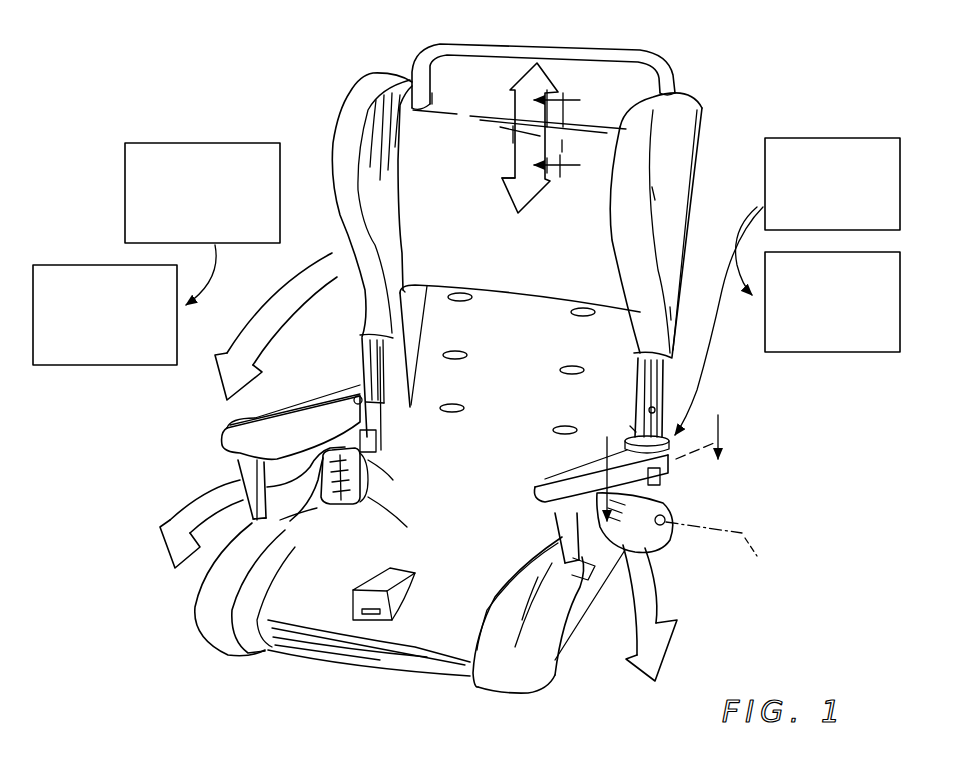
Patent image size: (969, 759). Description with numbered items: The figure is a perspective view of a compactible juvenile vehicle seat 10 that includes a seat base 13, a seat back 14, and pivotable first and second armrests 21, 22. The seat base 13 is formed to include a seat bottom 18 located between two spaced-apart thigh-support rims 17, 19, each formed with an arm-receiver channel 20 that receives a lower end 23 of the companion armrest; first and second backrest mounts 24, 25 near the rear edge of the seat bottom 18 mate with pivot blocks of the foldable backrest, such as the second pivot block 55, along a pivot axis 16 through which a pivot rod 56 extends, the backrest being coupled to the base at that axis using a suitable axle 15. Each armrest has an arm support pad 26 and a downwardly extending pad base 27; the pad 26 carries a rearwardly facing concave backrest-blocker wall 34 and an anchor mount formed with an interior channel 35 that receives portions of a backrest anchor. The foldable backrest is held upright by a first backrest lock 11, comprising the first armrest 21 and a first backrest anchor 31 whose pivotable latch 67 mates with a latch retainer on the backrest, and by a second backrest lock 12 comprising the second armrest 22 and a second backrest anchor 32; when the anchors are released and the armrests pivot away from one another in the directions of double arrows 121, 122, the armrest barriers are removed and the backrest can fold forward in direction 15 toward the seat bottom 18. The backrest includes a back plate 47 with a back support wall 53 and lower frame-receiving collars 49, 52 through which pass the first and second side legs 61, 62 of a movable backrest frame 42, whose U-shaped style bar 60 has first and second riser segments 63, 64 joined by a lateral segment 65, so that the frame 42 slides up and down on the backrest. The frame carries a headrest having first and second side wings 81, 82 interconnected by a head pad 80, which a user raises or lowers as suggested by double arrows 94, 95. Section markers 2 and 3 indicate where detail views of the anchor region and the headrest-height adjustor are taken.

The compactible juvenile vehicle seat 10 is at (252, 93).
The first backrest lock 11 is at (822, 137).
The second backrest lock 12 is at (110, 367).
The seat base 13 is at (389, 621).
The seat back 14 is at (508, 202).
The forward direction 15 is at (278, 286).
The pivot axis 16 is at (720, 548).
The first thigh-support rim 17 is at (490, 622).
The seat bottom 18 is at (432, 564).
The second thigh-support rim 19 is at (228, 580).
The arm-receiver channel 20 is at (258, 513).
The first armrest 21 is at (612, 475).
The second armrest 22 is at (275, 409).
The lower end 23 is at (288, 508).
The first backrest mount 24 is at (646, 576).
The second backrest mount 25 is at (350, 505).
The arm support pad 26 is at (322, 400).
The pad base 27 is at (295, 489).
The first backrest anchor 31 is at (870, 352).
The second backrest anchor 32 is at (190, 143).
The backrest-blocker wall 34 is at (368, 393).
The interior channel 35 is at (670, 482).
The movable backrest frame 42 is at (545, 58).
The back plate 47 is at (573, 290).
The first lower frame-receiving collar 49 is at (632, 428).
The second lower frame-receiving collar 52 is at (376, 433).
The back support wall 53 is at (498, 389).
The second pivot block 55 is at (383, 488).
The pivot rod 56 is at (664, 526).
The U-shaped style bar 60 is at (564, 58).
The first side leg 61 is at (646, 412).
The second side leg 62 is at (370, 352).
The first riser segment 63 is at (668, 83).
The second riser segment 64 is at (434, 98).
The lateral segment 65 is at (526, 42).
The latch 67 is at (675, 468).
The head pad 80 is at (520, 336).
The first side wing 81 is at (637, 203).
The second side wing 82 is at (360, 100).
The double arrow 94 is at (522, 71).
The double arrow 95 is at (512, 203).
The direction arrow 121 is at (663, 618).
The direction arrow 122 is at (200, 492).
The section line 2 is at (658, 456).
The section line 3 is at (566, 132).